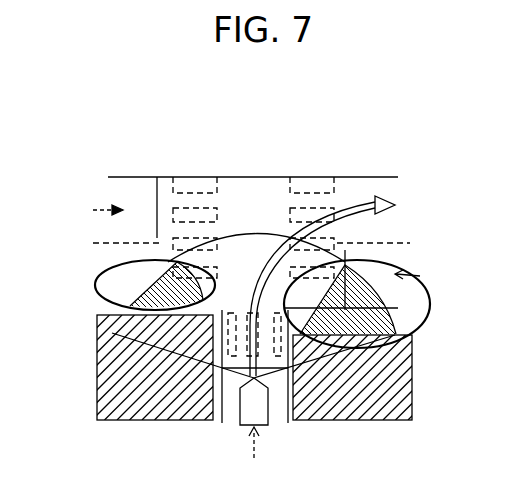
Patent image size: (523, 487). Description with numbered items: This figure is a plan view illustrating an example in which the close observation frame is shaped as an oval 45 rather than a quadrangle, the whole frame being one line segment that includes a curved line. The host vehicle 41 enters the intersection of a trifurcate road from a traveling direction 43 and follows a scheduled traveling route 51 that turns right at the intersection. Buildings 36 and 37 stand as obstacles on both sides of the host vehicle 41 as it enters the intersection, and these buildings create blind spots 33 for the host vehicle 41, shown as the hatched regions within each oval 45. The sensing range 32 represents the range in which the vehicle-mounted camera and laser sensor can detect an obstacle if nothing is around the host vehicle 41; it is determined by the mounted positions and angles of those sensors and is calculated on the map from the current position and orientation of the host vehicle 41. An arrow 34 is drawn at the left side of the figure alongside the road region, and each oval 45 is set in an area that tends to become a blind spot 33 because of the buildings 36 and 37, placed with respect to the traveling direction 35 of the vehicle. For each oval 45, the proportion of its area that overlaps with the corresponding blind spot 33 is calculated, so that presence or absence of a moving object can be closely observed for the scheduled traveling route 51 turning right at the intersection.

The sensing range 32 is at (258, 232).
The blind spot 33 is at (130, 300).
The air flow 34 is at (92, 208).
The traveling direction 35 is at (424, 287).
The building 36 is at (412, 383).
The building 37 is at (96, 369).
The host vehicle 41 is at (266, 425).
The traveling direction 43 is at (244, 448).
The oval 45 is at (112, 264).
The scheduled traveling route 51 is at (360, 200).